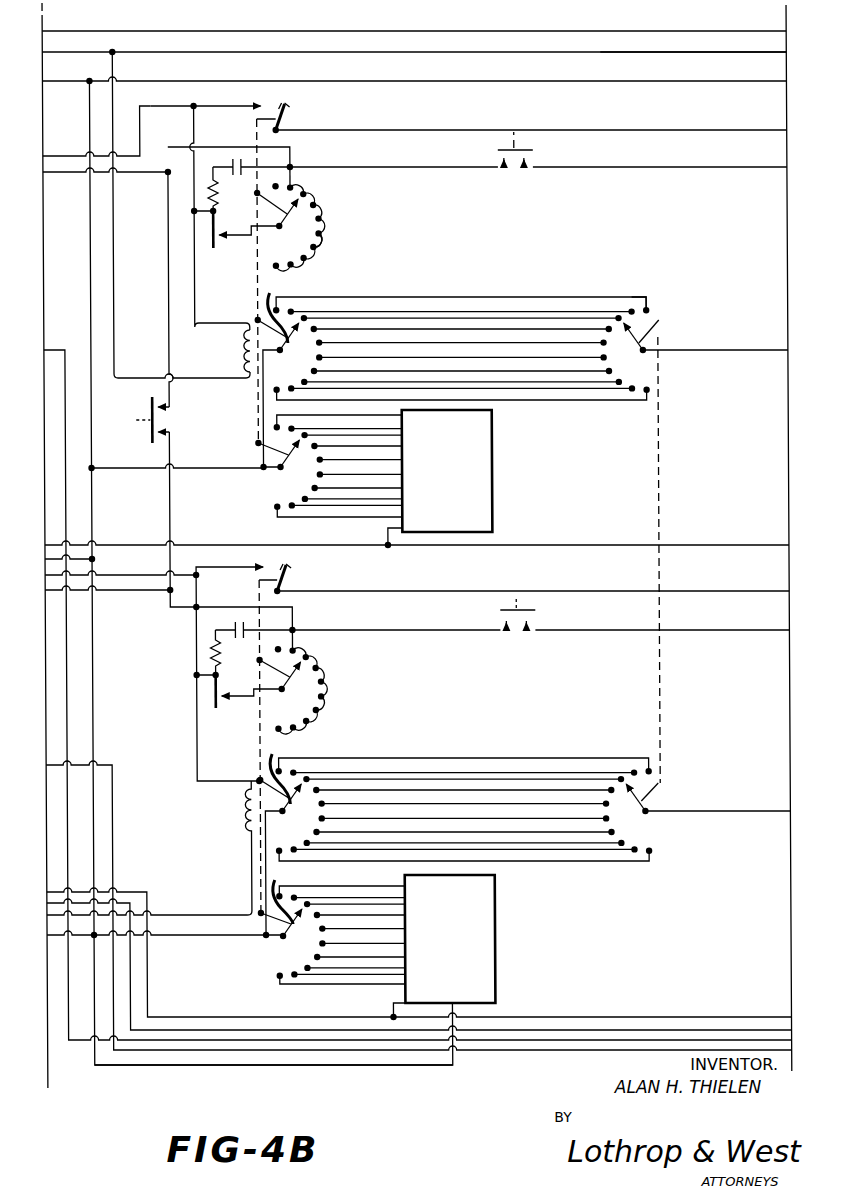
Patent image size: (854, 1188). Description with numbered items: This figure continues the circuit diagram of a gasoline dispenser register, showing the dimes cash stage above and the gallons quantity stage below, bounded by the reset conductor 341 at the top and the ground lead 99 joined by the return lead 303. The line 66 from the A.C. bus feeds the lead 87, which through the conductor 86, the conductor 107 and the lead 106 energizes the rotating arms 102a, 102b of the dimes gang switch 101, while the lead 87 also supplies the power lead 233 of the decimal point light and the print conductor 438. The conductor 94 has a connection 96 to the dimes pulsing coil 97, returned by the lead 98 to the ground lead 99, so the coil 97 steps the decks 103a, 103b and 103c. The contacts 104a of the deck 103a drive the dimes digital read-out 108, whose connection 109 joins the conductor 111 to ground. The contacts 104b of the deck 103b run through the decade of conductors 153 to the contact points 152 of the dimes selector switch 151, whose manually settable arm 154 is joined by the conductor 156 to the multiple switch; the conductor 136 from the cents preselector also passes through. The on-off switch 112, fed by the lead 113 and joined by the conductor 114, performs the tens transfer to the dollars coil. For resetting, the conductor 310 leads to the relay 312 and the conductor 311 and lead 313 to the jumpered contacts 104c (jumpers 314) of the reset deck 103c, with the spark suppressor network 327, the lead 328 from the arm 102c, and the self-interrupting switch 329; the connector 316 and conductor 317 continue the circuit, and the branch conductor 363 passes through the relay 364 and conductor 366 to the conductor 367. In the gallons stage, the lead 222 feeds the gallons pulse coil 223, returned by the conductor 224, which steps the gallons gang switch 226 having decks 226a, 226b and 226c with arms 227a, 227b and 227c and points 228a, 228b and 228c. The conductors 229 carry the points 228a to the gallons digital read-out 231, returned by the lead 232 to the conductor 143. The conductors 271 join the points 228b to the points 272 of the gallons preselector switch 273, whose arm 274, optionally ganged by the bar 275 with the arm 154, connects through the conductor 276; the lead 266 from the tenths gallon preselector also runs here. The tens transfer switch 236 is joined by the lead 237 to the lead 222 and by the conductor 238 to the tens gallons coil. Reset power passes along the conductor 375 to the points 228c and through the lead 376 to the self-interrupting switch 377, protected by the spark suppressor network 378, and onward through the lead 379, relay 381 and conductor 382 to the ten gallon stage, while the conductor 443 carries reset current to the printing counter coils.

The conductor 341 is at (393, 26).
The ground lead 99 is at (73, 57).
The conductor 66 is at (742, 92).
The return lead 303 is at (660, 60).
The conductor 94 is at (84, 155).
The lead 113 is at (210, 118).
The connector 316 is at (182, 140).
The conductor 317 is at (126, 182).
The on-off switch 112 is at (290, 121).
The conductor 114 is at (611, 130).
The lead 98 is at (118, 328).
The dimes pulsing coil 97 is at (240, 356).
The connection 96 is at (226, 312).
The branch conductor 363 is at (182, 267).
The spark suppressor network 327 is at (232, 200).
The lead 328 is at (226, 260).
The self-interrupting switch 329 is at (215, 238).
The conductor 311 is at (442, 182).
The relay 312 is at (512, 170).
The conductor 310 is at (722, 177).
The lead 313 is at (294, 187).
The reset deck 103c is at (270, 261).
The contacts 104c is at (324, 222).
The rotating arm 102c is at (281, 216).
The jumpers 314 is at (322, 246).
The contacts 104b is at (304, 332).
The deck 103b is at (276, 372).
The conductors 153 is at (539, 298).
The rotating arm 102b is at (278, 313).
The dimes selector switch 151 is at (626, 377).
The contact points 152 is at (658, 300).
The preselector switch arm 154 is at (657, 338).
The conductor 156 is at (730, 358).
The bar 275 is at (656, 500).
The conductor 136 is at (52, 349).
The lead 87 is at (90, 424).
The relay 364 is at (172, 406).
The conductor 366 is at (160, 381).
The conductor 107 is at (185, 478).
The dimes gang switch 101 is at (256, 414).
The lead 106 is at (251, 450).
The conductor 86 is at (89, 559).
The conductor 111 is at (378, 554).
The deck 103a is at (276, 498).
The contacts 104a is at (272, 508).
The rotating arm 102a is at (282, 466).
The digital read-out 108 is at (490, 494).
The connection 109 is at (390, 536).
The lead 237 is at (216, 584).
The conductor 367 is at (132, 611).
The conductor 375 is at (292, 613).
The on-off tens transfer switch 236 is at (300, 583).
The conductor 238 is at (611, 588).
The lead 222 is at (193, 731).
The spark suppressor network 378 is at (232, 646).
The self-interrupting switch 377 is at (220, 714).
The lead 376 is at (250, 700).
The lead 379 is at (446, 632).
The relay 381 is at (512, 633).
The conductor 382 is at (722, 640).
The deck 226c is at (274, 709).
The contact points 228c is at (326, 690).
The contact arm 227c is at (308, 666).
The contact points 228b is at (304, 793).
The deck 226b is at (453, 811).
The conductors 271 is at (506, 760).
The points 272 is at (654, 854).
The contact arm 227b is at (292, 775).
The gallons preselector switch 273 is at (650, 834).
The gallons preselector arm 274 is at (656, 800).
The conductor 276 is at (777, 810).
The gallons pulse coil 223 is at (242, 819).
The lead 266 is at (130, 774).
The conductor 443 is at (130, 892).
The conductor 143 is at (620, 1016).
The conductor 224 is at (198, 906).
The conductor 438 is at (89, 935).
The gallons gang switch 226 is at (262, 944).
The deck 226a is at (274, 964).
The contact points 228a is at (282, 982).
The conductors 229 is at (316, 986).
The contact arm 227a is at (300, 902).
The digital read-out 231 is at (490, 985).
The lead 232 is at (400, 1007).
The power lead 233 is at (396, 1078).